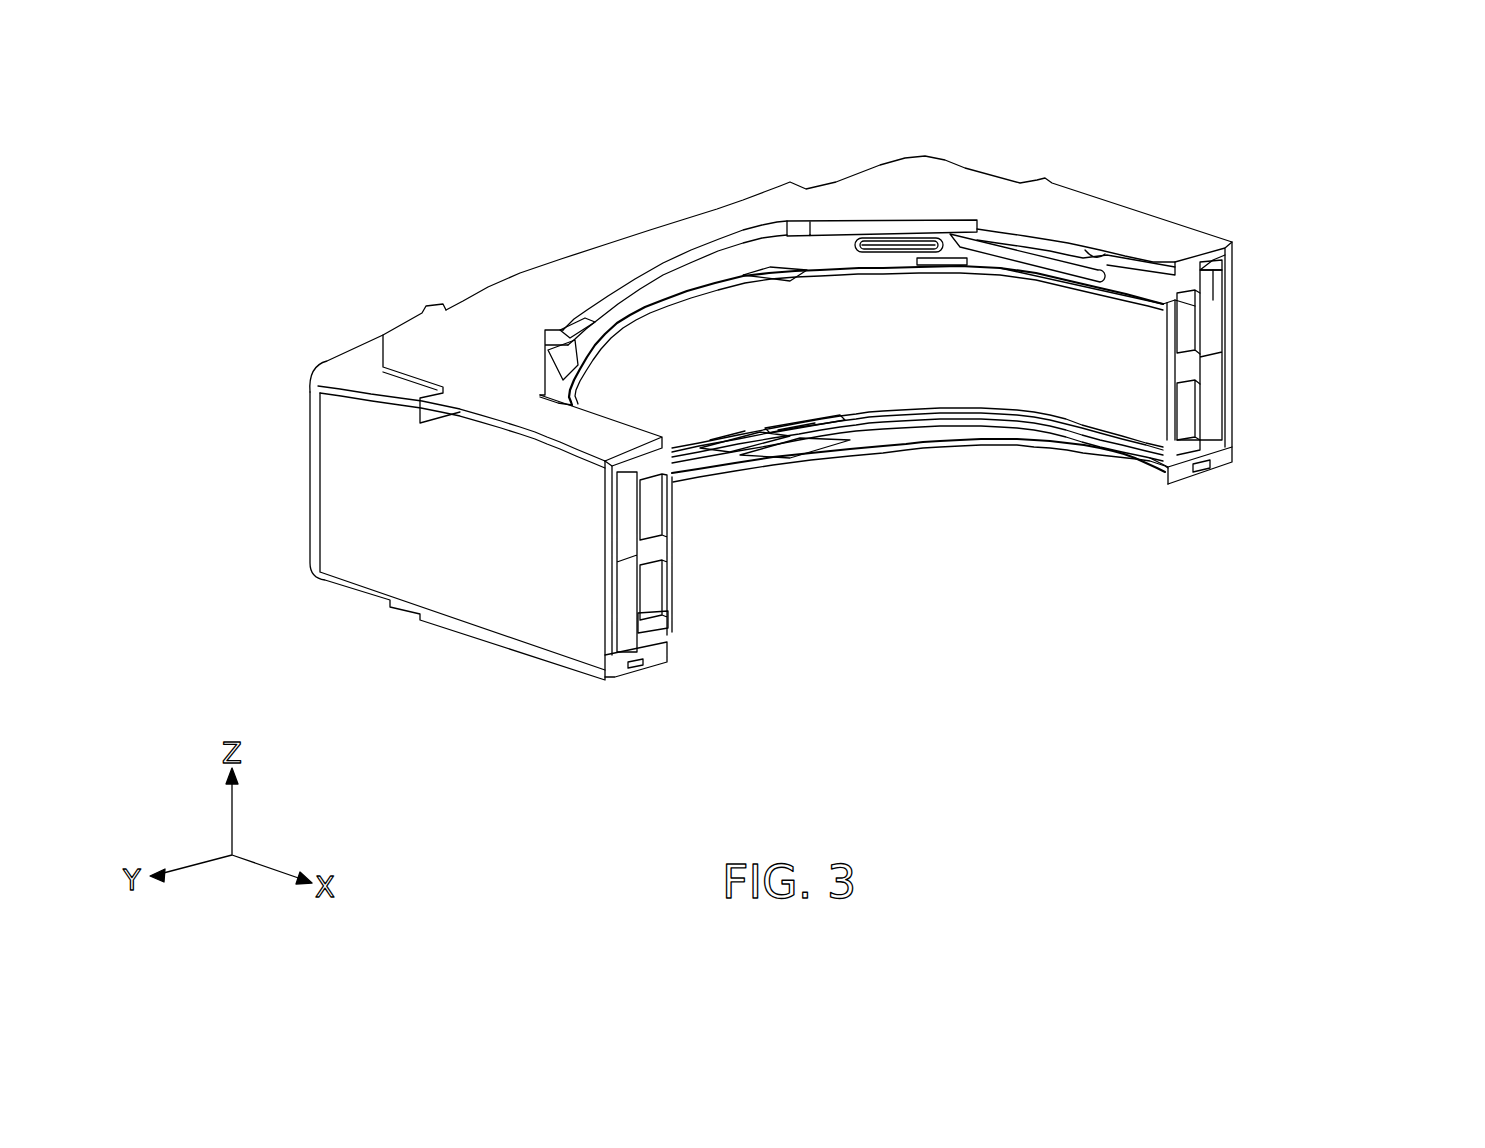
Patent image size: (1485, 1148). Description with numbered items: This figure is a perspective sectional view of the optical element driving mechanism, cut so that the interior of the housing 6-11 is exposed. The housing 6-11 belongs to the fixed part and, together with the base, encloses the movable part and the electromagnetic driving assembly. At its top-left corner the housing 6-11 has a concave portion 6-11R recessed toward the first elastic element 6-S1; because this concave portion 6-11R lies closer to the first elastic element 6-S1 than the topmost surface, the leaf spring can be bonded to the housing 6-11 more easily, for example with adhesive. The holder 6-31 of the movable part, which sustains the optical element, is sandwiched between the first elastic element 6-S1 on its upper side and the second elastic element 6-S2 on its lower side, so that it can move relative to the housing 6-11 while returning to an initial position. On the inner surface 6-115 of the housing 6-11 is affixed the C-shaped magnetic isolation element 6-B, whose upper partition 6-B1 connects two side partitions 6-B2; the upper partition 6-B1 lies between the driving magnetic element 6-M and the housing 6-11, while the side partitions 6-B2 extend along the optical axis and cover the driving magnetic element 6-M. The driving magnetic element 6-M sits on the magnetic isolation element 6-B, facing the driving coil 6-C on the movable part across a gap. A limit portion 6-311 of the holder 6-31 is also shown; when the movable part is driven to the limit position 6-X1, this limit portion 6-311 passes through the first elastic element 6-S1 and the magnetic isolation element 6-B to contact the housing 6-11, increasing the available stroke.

The housing 6-11 is at (627, 237).
The concave portion 6-11R is at (362, 358).
The limit portion 6-311 is at (1053, 258).
The inner surface 6-115 is at (1097, 253).
The first elastic element 6-S1 is at (1130, 290).
The limit position 6-X1 is at (1043, 236).
The magnetic isolation element 6-B is at (1322, 297).
The upper partition 6-B1 is at (1217, 268).
The side partition 6-B2 is at (1220, 298).
The driving magnetic element 6-M is at (1210, 397).
The driving coil 6-C is at (652, 593).
The holder 6-31 is at (1035, 383).
The second elastic element 6-S2 is at (1113, 440).